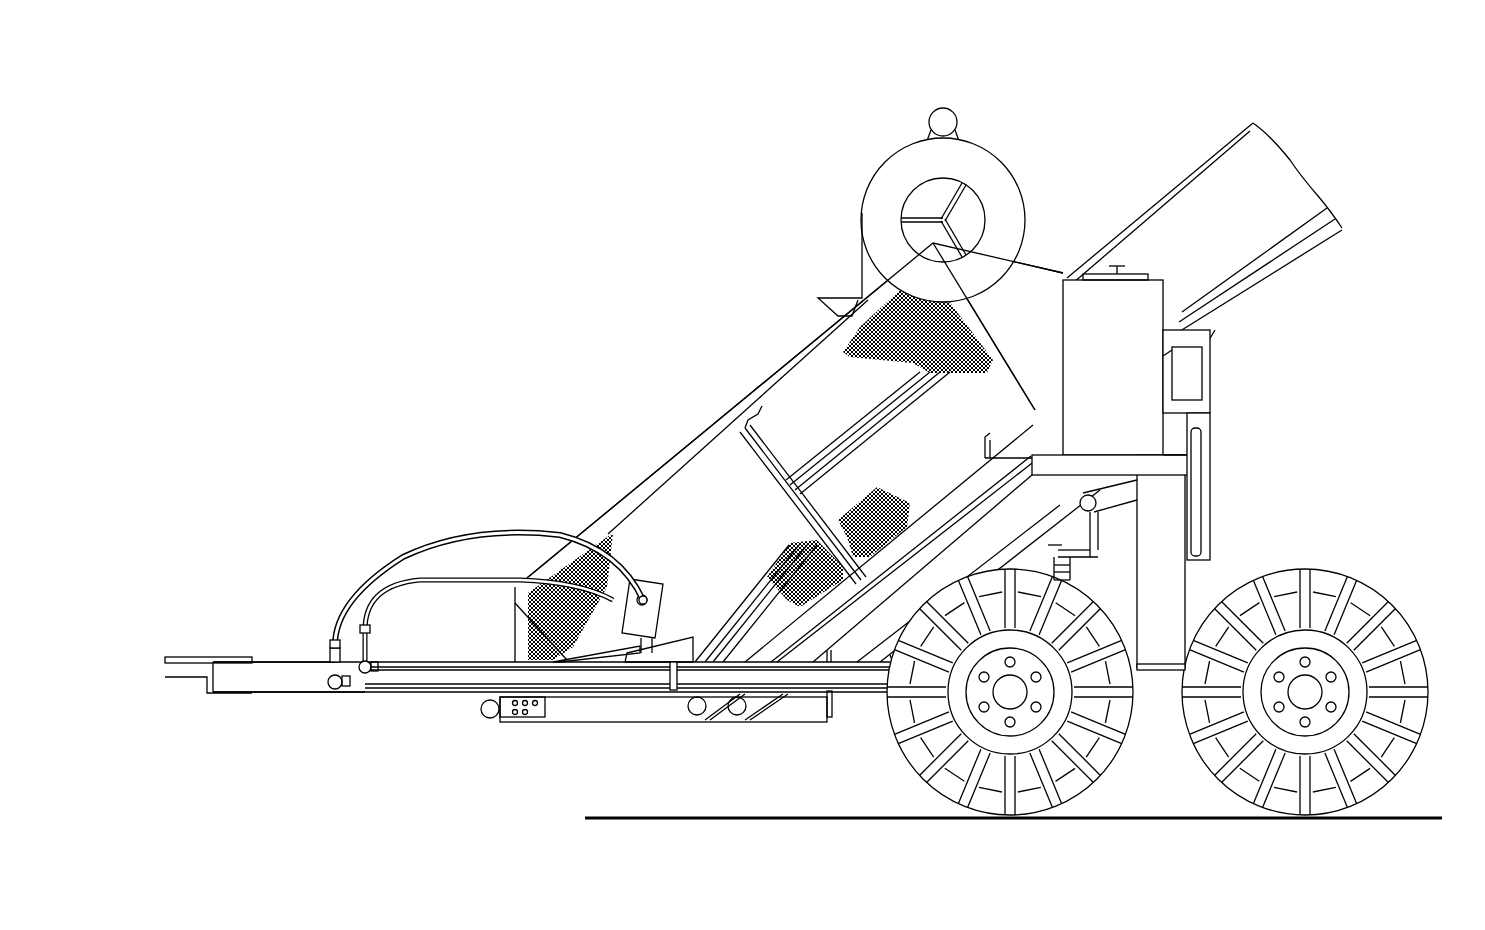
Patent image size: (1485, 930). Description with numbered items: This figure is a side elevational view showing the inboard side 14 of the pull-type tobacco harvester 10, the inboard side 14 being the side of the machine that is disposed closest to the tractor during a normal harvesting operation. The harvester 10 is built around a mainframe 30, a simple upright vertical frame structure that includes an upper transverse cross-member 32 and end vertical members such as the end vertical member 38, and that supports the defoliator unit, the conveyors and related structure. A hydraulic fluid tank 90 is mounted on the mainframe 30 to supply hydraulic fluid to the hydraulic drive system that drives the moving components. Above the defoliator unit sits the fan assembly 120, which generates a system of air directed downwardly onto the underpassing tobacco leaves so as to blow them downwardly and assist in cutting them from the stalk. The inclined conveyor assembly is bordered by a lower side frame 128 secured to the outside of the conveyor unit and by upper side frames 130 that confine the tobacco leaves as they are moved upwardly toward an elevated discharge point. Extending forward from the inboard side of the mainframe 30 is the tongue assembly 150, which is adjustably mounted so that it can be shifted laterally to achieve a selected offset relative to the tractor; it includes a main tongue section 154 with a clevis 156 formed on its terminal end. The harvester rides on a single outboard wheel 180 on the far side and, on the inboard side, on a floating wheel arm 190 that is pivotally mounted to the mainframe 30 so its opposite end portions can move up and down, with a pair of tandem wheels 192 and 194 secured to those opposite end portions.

The pull-type tobacco harvester 10 is at (608, 190).
The inboard side 14 is at (637, 739).
The mainframe 30 is at (1276, 552).
The upper transverse cross-member 32 is at (1175, 470).
The end vertical member 38 is at (1175, 510).
The hydraulic fluid tank 90 is at (1136, 360).
The fan assembly 120 is at (985, 178).
The lower side frame 128 is at (783, 380).
The upper side frame 130 is at (1204, 251).
The tongue assembly 150 is at (433, 713).
The main tongue section 154 is at (297, 677).
The clevis 156 is at (195, 660).
The outboard wheel 180 is at (1198, 577).
The floating wheel arm 190 is at (1158, 705).
The tandem wheel 192 is at (930, 758).
The tandem wheel 194 is at (1398, 777).